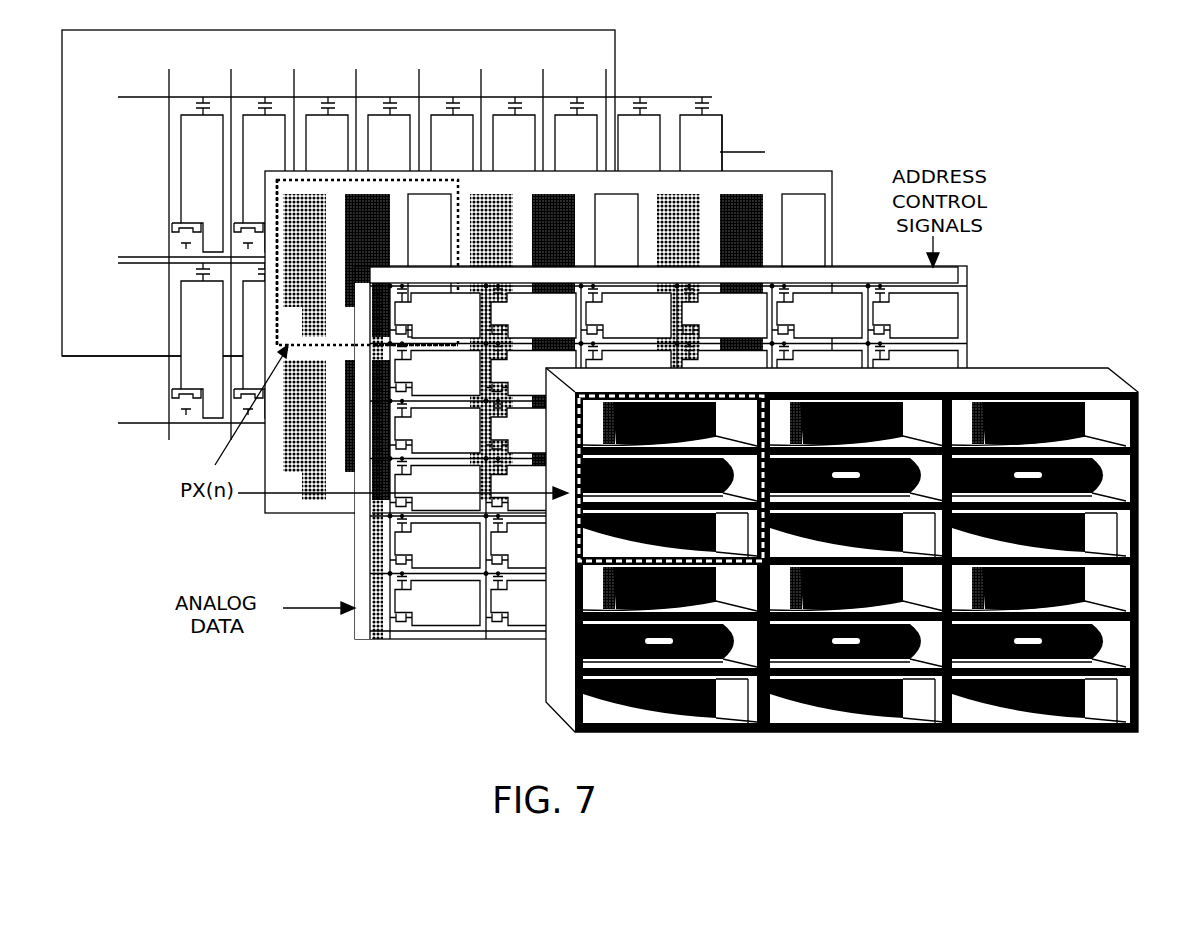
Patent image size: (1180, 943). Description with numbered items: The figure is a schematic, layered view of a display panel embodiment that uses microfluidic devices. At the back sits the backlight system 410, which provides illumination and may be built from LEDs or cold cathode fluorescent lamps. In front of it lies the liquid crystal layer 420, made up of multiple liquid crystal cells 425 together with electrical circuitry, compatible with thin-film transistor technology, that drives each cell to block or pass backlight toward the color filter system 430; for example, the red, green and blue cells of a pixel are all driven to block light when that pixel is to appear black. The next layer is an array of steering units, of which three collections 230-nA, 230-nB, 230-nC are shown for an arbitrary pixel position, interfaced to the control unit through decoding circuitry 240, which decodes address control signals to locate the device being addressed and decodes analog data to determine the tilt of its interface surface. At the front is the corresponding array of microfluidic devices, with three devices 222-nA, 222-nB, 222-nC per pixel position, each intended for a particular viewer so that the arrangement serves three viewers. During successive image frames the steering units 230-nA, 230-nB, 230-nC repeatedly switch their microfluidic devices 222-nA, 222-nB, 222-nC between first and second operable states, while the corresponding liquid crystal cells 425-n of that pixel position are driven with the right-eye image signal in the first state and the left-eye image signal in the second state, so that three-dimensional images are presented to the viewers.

The backlight system 410 is at (615, 52).
The liquid crystal layer 420 is at (439, 246).
The liquid crystal cell 425 is at (494, 235).
The liquid crystal cells for pixel position n 425-n is at (323, 132).
The color filter system 430 is at (822, 171).
The decoding circuitry 240 is at (664, 276).
The steering units A 230-nA is at (673, 311).
The steering units B 230-nB is at (673, 369).
The steering units C 230-nC is at (673, 426).
The microfluidic device A 222-nA is at (670, 424).
The microfluidic device B 222-nB is at (670, 479).
The microfluidic device C 222-nC is at (670, 535).